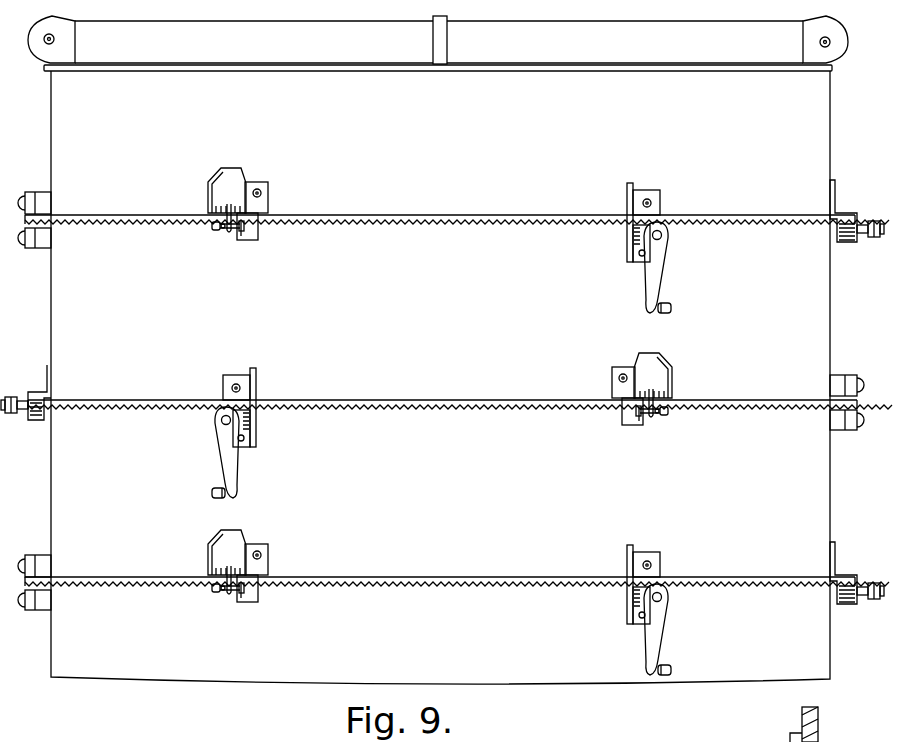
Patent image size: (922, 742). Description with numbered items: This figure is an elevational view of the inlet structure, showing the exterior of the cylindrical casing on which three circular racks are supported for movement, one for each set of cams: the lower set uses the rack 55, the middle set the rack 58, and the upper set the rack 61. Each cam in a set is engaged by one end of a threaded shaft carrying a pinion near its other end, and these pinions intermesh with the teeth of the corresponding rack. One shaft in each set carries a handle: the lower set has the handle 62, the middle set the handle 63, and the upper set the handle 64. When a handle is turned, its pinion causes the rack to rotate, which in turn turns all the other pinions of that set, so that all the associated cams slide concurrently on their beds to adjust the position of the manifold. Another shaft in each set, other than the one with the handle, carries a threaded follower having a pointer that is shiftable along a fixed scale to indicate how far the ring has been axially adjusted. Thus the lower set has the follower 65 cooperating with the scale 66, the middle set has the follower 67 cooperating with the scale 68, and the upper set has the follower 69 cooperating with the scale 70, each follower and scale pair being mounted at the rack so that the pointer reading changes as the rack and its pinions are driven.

The rack 55 is at (431, 576).
The rack 58 is at (420, 397).
The rack 61 is at (446, 212).
The handle 62 is at (660, 632).
The handle 63 is at (233, 470).
The handle 64 is at (660, 277).
The follower 65 is at (228, 598).
The scale 66 is at (238, 540).
The follower 67 is at (652, 420).
The scale 68 is at (663, 378).
The follower 69 is at (232, 238).
The scale 70 is at (235, 172).